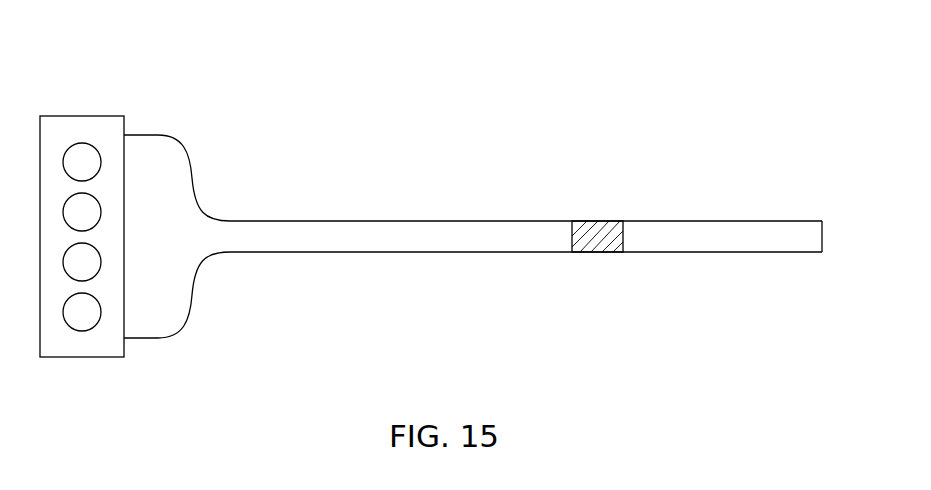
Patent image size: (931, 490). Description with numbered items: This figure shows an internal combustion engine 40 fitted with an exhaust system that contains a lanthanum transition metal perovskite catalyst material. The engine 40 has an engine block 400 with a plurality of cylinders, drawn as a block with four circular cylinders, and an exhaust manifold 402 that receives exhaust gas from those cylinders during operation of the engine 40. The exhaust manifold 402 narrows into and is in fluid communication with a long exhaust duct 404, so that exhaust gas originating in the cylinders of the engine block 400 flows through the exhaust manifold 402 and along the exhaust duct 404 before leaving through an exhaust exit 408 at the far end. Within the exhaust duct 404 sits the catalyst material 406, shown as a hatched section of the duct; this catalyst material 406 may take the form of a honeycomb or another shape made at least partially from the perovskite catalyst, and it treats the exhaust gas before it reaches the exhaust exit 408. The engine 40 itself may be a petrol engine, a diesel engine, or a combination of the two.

The internal combustion engine 40 is at (65, 93).
The engine block 400 is at (64, 360).
The exhaust manifold 402 is at (158, 134).
The exhaust duct 404 is at (393, 221).
The catalyst material 406 is at (598, 230).
The exhaust exit 408 is at (820, 236).